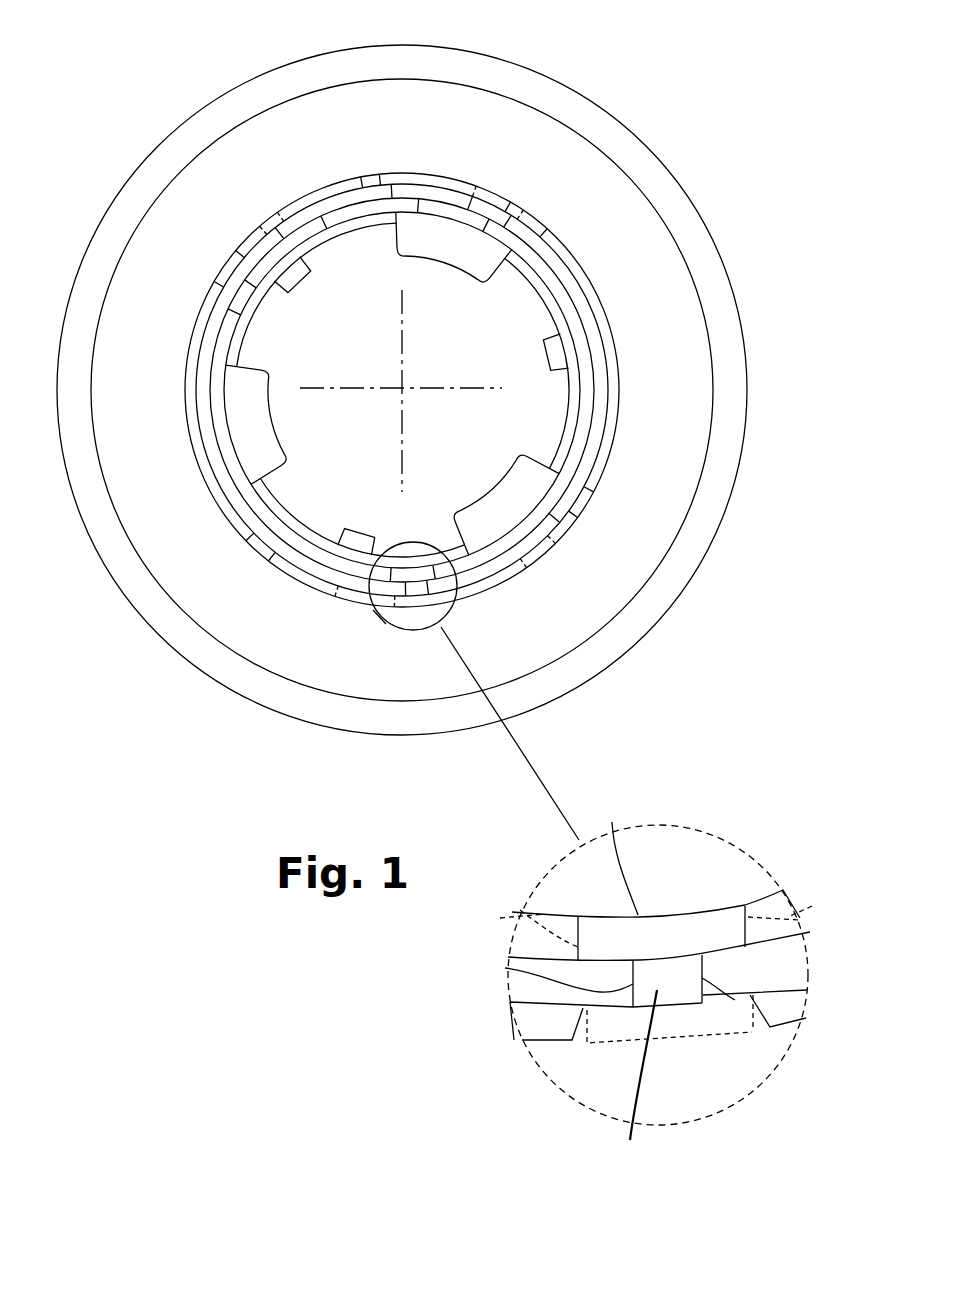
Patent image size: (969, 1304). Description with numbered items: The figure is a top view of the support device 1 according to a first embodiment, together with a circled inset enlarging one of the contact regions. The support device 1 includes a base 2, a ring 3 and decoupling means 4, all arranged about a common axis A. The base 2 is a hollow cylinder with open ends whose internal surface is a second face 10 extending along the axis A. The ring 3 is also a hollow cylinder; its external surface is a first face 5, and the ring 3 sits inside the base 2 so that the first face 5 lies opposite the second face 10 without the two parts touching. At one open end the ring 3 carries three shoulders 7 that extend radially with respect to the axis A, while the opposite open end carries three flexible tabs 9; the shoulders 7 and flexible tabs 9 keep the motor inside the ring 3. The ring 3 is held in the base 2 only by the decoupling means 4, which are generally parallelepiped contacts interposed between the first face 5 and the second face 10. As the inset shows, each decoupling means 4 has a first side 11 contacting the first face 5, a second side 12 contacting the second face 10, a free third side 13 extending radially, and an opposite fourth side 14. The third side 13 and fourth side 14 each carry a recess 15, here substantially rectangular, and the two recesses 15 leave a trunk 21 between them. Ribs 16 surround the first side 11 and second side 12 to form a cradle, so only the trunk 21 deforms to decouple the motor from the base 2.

The support device 1 is at (692, 68).
The base 2 is at (568, 85).
The ring 3 is at (397, 384).
The decoupling means 4 is at (716, 909).
The first face 5 is at (487, 216).
The shoulders 7 is at (434, 273).
The flexible tabs 9 is at (306, 283).
The second face 10 is at (318, 186).
The first side 11 is at (616, 853).
The second side 12 is at (667, 1058).
The third side 13 is at (816, 904).
The fourth side 14 is at (504, 913).
The recess 15 is at (508, 968).
The ribs 16 is at (445, 199).
The trunk 21 is at (621, 1083).
The axis A is at (402, 388).